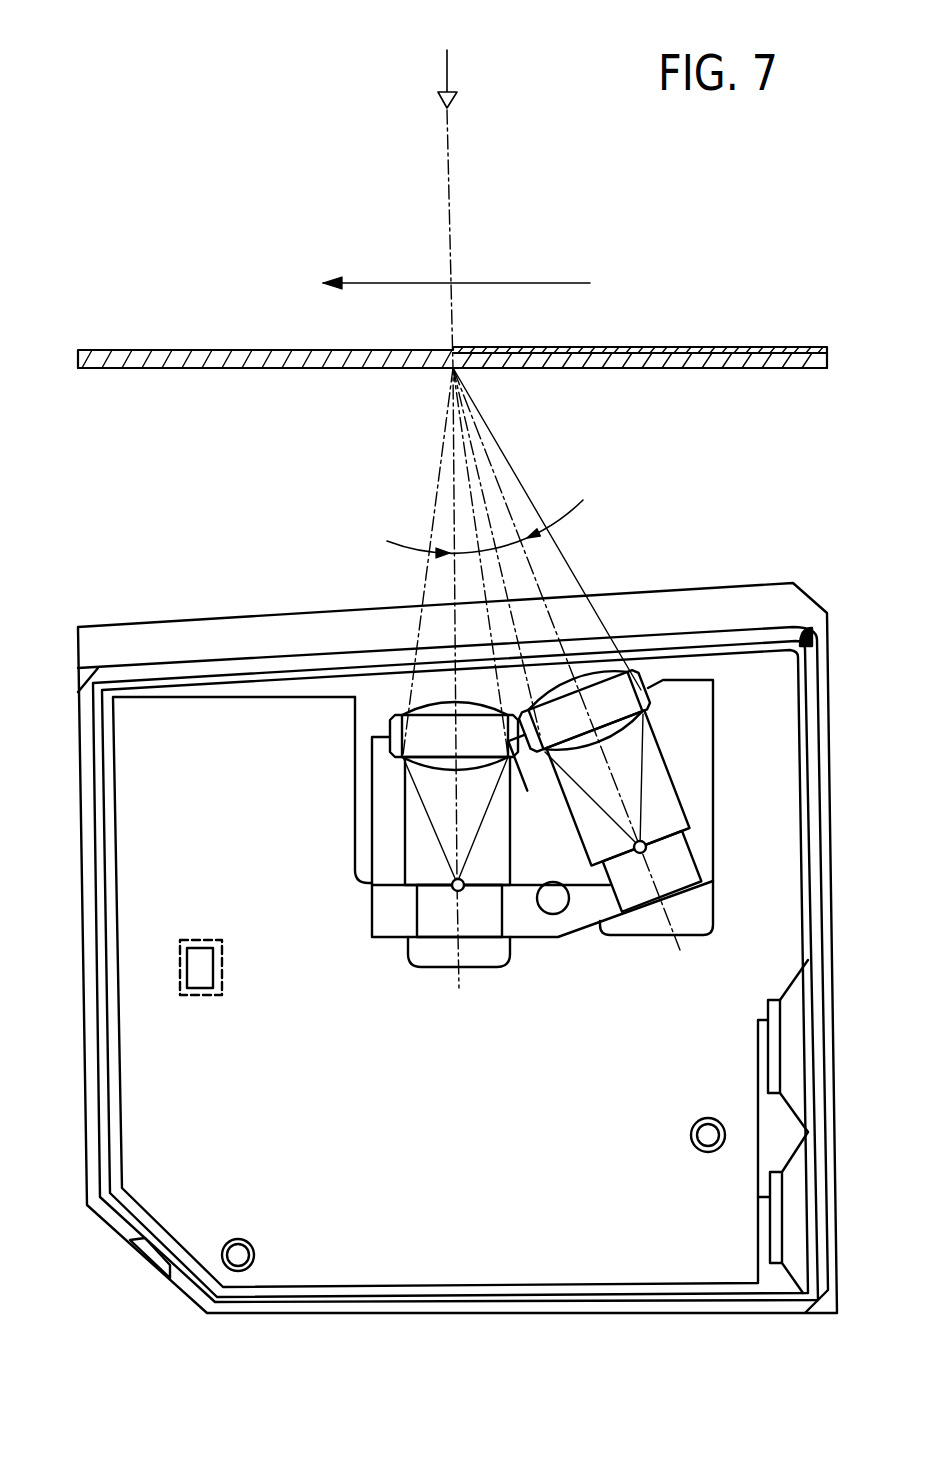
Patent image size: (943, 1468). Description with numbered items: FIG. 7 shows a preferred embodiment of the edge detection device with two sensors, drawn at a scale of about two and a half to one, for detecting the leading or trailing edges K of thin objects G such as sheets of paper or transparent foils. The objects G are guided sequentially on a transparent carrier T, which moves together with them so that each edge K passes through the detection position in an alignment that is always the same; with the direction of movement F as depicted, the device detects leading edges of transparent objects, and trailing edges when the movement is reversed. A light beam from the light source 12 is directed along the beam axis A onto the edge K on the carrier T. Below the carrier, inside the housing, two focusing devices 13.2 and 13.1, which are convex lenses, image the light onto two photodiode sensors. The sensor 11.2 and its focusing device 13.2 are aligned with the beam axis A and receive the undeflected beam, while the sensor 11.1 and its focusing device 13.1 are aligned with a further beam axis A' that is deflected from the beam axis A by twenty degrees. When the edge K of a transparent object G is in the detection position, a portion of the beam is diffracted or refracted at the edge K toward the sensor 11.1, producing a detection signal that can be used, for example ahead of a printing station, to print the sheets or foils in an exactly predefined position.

The light source 12 is at (460, 38).
The focusing device 13.1 is at (650, 697).
The focusing device 13.2 is at (390, 748).
The sensor 11.1 is at (647, 849).
The sensor 11.2 is at (451, 887).
The object G is at (684, 349).
The transparent carrier T is at (718, 370).
The edge K is at (447, 348).
The direction of movement F is at (412, 283).
The beam axis A is at (423, 549).
The further beam axis A' is at (566, 659).